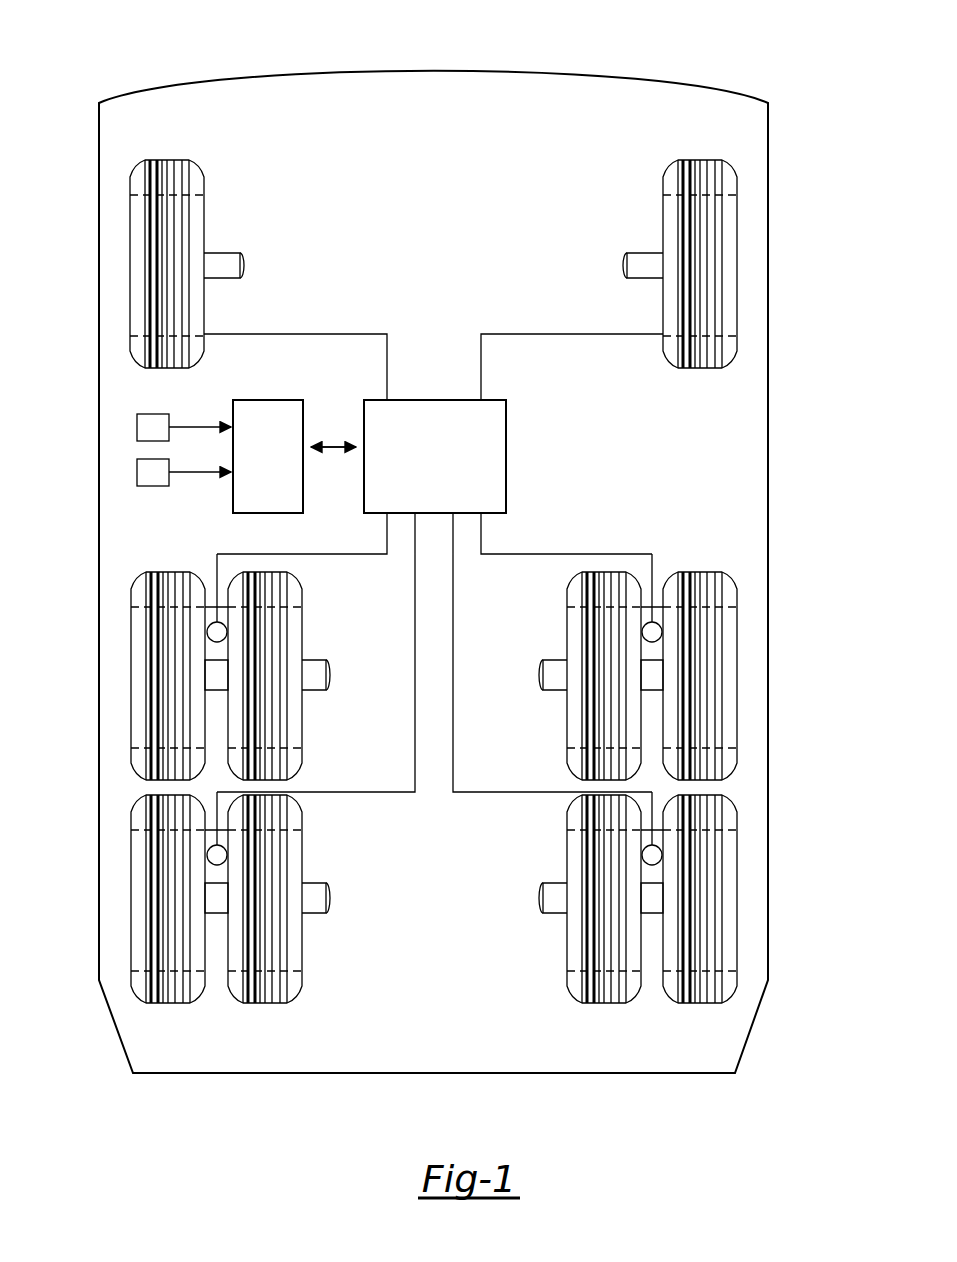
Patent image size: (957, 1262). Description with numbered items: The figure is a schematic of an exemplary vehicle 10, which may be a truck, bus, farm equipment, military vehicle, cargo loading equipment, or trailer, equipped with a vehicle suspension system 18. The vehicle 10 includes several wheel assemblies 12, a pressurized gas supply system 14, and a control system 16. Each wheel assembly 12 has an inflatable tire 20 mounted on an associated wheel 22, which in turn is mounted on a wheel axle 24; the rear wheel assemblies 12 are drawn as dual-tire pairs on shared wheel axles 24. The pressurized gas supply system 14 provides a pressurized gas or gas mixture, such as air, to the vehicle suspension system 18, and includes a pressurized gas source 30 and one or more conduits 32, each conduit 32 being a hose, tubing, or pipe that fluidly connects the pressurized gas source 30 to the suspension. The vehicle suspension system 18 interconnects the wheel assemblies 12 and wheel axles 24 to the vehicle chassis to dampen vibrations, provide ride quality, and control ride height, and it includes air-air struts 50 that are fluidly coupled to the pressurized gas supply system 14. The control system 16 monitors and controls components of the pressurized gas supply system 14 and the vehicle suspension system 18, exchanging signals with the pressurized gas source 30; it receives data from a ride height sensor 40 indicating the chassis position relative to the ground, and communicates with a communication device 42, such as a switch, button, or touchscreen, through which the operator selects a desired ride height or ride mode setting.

The vehicle 10 is at (694, 68).
The wheel assembly 12 is at (157, 157).
The pressurized gas supply system 14 is at (459, 424).
The control system 16 is at (260, 474).
The vehicle suspension system 18 is at (644, 504).
The inflatable tire 20 is at (168, 572).
The wheel 22 is at (130, 629).
The wheel axle 24 is at (313, 660).
The pressurized gas source 30 is at (430, 474).
The conduit 32 is at (372, 334).
The ride height sensor 40 is at (143, 438).
The communication device 42 is at (143, 483).
The air-air strut 50 is at (652, 887).